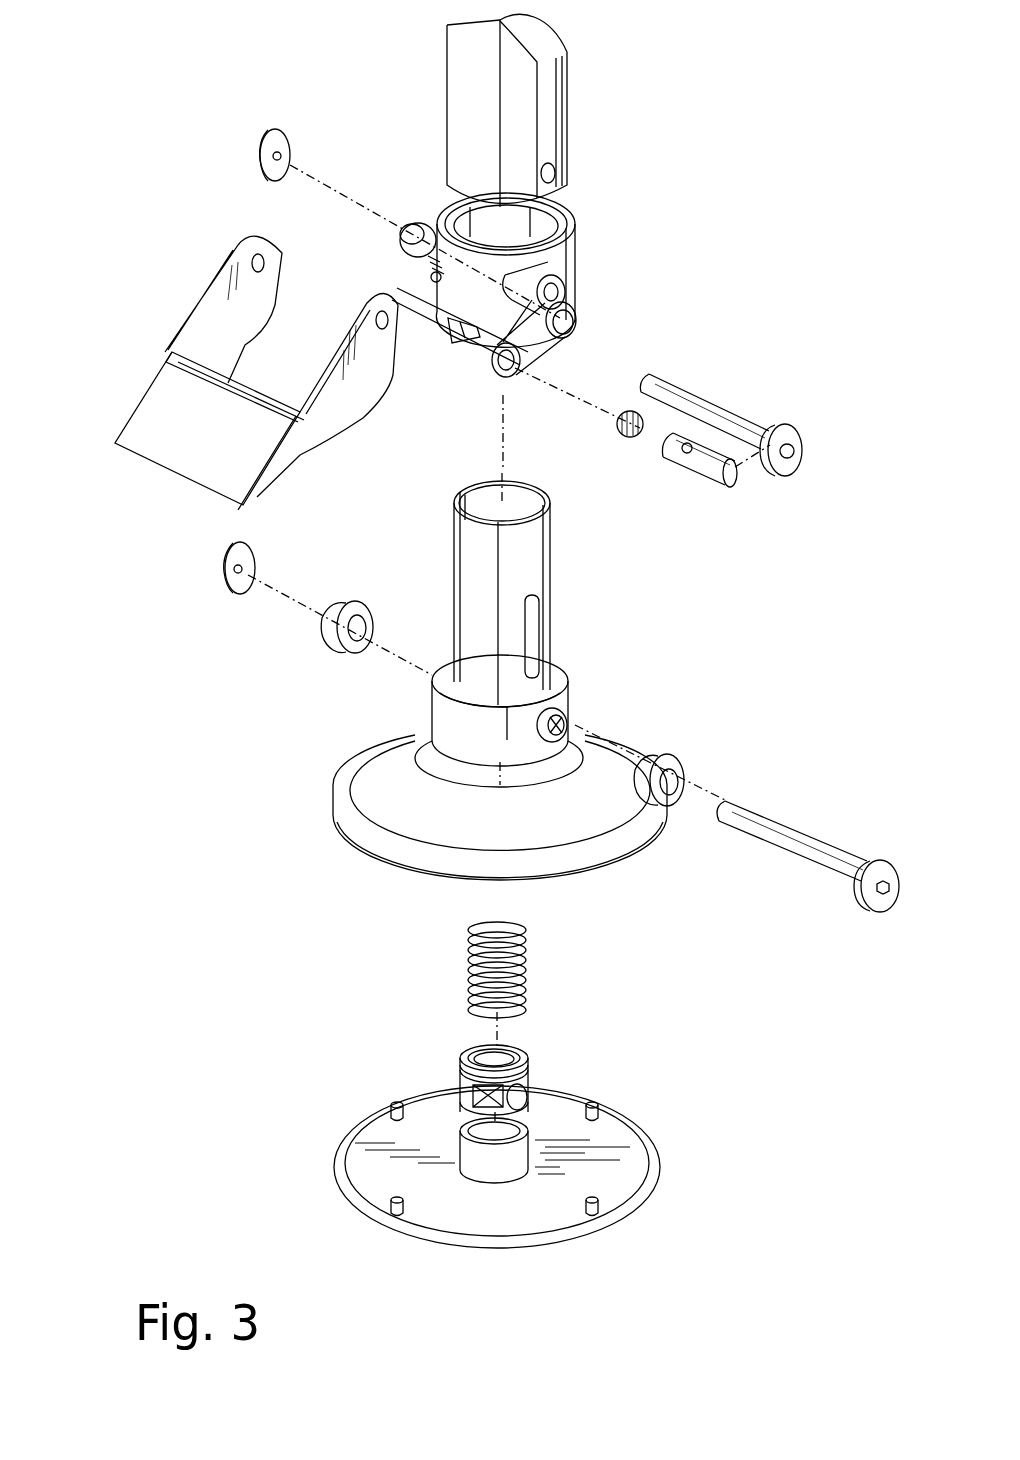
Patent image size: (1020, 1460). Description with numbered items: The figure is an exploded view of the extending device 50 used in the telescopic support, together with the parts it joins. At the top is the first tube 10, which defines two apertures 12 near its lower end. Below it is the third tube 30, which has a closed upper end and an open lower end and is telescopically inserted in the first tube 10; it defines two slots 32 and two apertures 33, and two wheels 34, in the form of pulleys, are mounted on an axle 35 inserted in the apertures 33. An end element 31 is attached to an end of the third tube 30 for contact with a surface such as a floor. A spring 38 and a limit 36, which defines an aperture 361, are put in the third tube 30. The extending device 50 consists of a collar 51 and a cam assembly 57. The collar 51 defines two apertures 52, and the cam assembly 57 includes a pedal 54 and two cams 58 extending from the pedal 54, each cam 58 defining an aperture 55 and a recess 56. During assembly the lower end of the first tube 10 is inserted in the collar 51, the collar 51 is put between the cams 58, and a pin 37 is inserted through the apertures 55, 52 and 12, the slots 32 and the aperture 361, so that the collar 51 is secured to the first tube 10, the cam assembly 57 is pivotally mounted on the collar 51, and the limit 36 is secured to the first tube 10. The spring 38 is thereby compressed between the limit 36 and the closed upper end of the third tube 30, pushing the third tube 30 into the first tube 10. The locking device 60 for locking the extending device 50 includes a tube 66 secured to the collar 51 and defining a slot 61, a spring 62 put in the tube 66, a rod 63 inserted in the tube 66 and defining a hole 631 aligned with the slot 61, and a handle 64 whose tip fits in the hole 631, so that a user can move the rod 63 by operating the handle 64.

The first tube 10 is at (545, 88).
The aperture 12 is at (552, 170).
The third tube 30 is at (540, 550).
The end element 31 is at (365, 786).
The slot 32 is at (534, 636).
The aperture 33 is at (562, 715).
The wheel 34 is at (347, 642).
The axle 35 is at (820, 865).
The limit 36 is at (530, 1062).
The aperture 361 is at (527, 1092).
The pin 37 is at (790, 440).
The spring 38 is at (527, 975).
The extending device 50 is at (318, 94).
The collar 51 is at (560, 278).
The aperture 52 is at (566, 320).
The pedal 54 is at (165, 380).
The aperture 55 is at (258, 262).
The recess 56 is at (255, 338).
The cam assembly 57 is at (213, 357).
The cam 58 is at (218, 283).
The locking device 60 is at (522, 385).
The slot 61 is at (466, 342).
The spring 62 is at (626, 438).
The rod 63 is at (730, 480).
The hole 631 is at (688, 453).
The handle 64 is at (415, 228).
The tube 66 is at (488, 360).